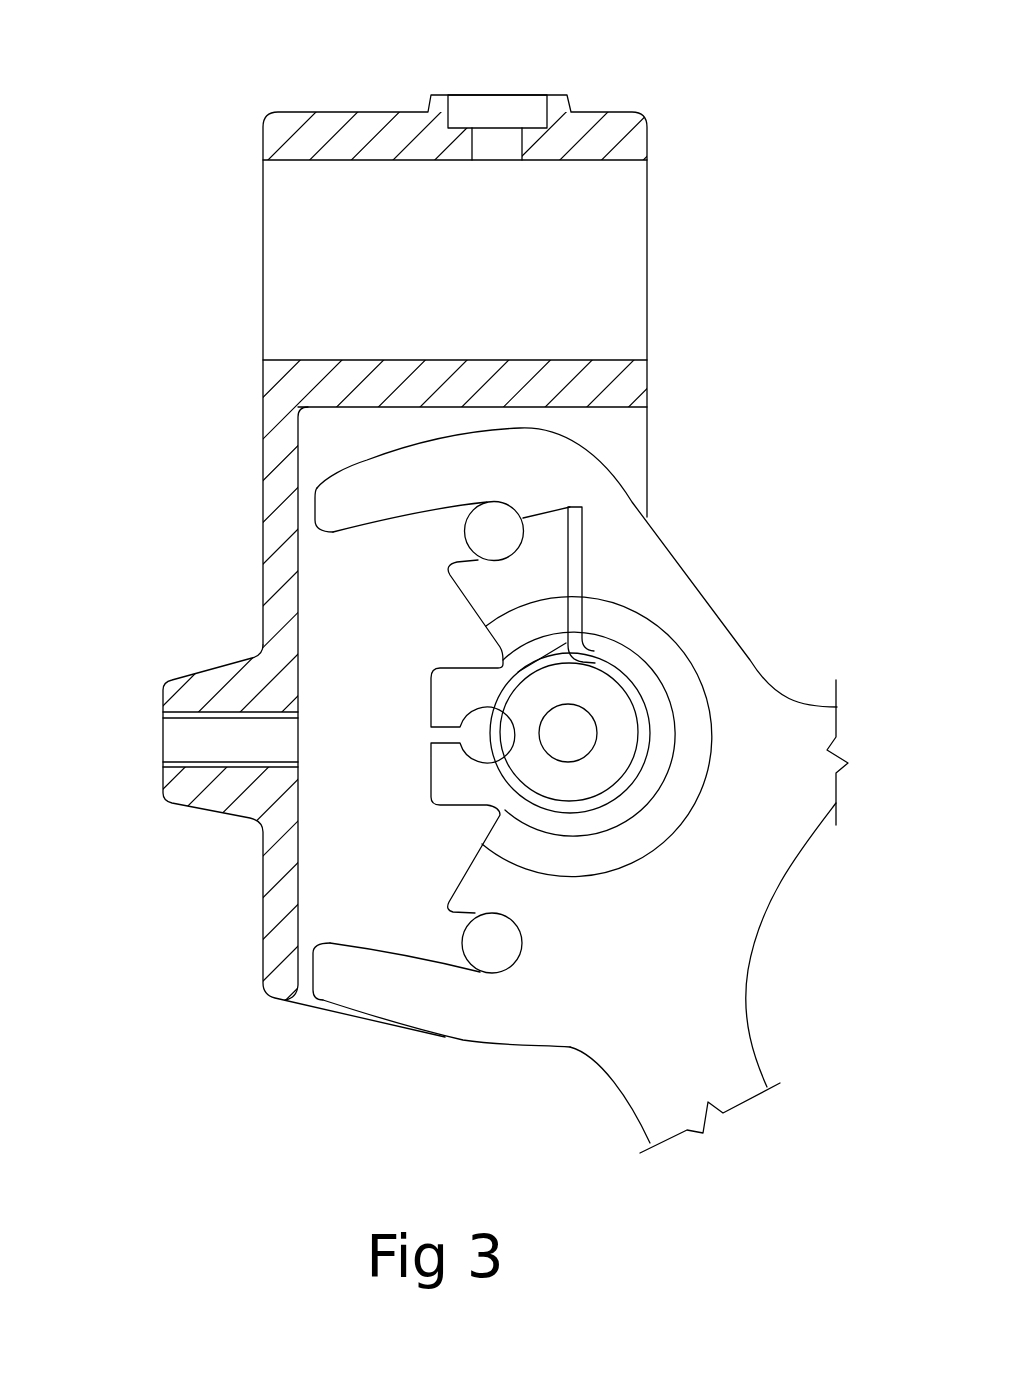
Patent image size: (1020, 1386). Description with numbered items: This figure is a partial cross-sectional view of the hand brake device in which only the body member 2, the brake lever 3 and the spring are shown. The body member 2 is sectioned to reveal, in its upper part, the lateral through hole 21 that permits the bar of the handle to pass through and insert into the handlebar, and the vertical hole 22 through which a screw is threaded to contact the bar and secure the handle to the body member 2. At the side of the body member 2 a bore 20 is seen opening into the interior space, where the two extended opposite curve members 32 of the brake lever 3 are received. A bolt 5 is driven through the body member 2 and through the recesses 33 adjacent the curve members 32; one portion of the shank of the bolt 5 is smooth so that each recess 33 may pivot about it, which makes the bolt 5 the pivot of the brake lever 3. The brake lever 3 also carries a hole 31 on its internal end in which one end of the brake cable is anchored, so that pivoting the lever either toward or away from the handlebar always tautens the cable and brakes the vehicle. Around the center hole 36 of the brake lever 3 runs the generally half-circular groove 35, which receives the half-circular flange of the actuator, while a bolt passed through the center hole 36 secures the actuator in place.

The body member 2 is at (290, 405).
The brake lever 3 is at (730, 697).
The bolt 5 is at (675, 630).
The bore 20 is at (190, 744).
The lateral through hole 21 is at (597, 237).
The vertical hole 22 is at (505, 117).
The hole 31 is at (337, 977).
The curve members 32 is at (358, 507).
The recess 33 is at (570, 507).
The half-circular groove 35 is at (573, 858).
The center hole 36 is at (585, 750).